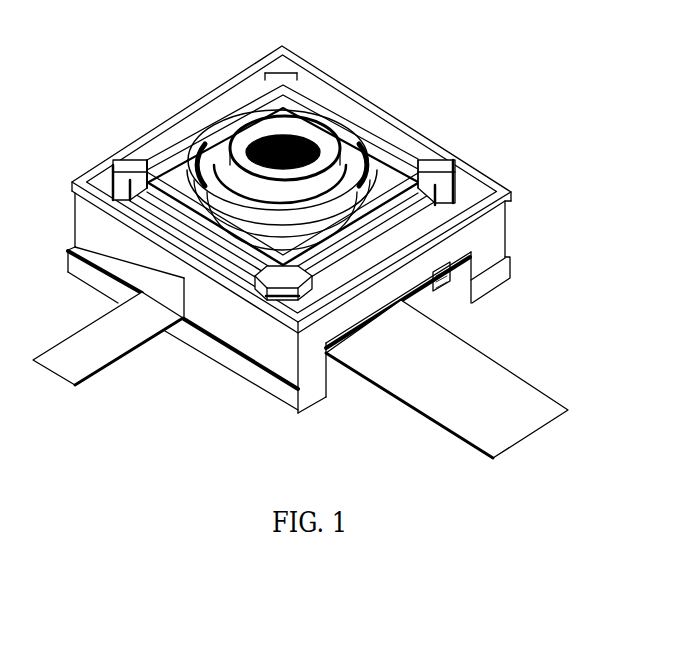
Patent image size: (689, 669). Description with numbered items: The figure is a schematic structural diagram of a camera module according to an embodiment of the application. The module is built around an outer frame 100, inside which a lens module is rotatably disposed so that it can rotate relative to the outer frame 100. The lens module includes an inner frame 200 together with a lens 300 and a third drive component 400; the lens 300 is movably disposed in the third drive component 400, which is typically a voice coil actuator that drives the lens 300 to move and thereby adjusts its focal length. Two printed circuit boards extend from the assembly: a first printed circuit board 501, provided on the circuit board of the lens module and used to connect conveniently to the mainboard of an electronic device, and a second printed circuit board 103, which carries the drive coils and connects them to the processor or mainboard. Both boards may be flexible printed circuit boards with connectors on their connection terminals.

The outer frame 100 is at (378, 117).
The inner frame 200 is at (190, 127).
The lens 300 is at (383, 165).
The third drive component 400 is at (173, 167).
The second printed circuit board 103 is at (118, 335).
The first printed circuit board 501 is at (473, 372).